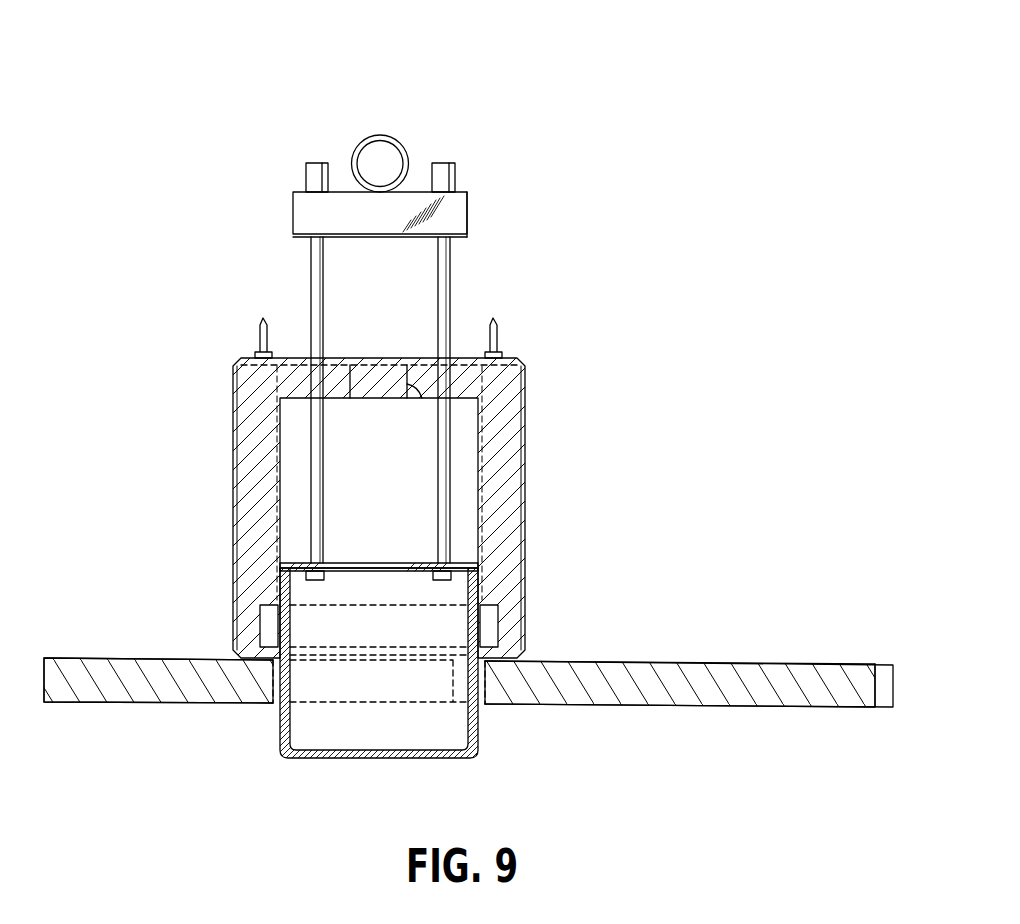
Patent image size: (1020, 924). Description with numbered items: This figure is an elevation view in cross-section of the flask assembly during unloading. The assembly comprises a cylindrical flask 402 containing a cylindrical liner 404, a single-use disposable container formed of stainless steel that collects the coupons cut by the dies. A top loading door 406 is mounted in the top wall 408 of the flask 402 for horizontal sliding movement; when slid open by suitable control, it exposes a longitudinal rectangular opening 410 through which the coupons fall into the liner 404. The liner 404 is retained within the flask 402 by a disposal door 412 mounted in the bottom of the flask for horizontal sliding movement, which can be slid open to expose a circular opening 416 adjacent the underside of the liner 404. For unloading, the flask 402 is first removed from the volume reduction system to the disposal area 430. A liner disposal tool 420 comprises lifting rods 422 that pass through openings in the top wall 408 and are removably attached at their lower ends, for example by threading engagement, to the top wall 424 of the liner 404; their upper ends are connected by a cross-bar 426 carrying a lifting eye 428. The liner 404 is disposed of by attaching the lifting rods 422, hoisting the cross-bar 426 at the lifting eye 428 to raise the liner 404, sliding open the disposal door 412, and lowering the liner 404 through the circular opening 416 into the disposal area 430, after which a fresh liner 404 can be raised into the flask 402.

The cylindrical flask 402 is at (234, 491).
The cylindrical liner 404 is at (285, 586).
The top loading door 406 is at (375, 380).
The top wall 408 is at (304, 368).
The longitudinal rectangular opening 410 is at (408, 382).
The disposal door 412 is at (490, 628).
The circular opening 416 is at (397, 628).
The liner disposal tool 420 is at (383, 214).
The lifting rods 422 is at (449, 277).
The top wall of liner 424 is at (445, 557).
The cross-bar 426 is at (467, 213).
The lifting eye 428 is at (392, 155).
The disposal area 430 is at (783, 667).